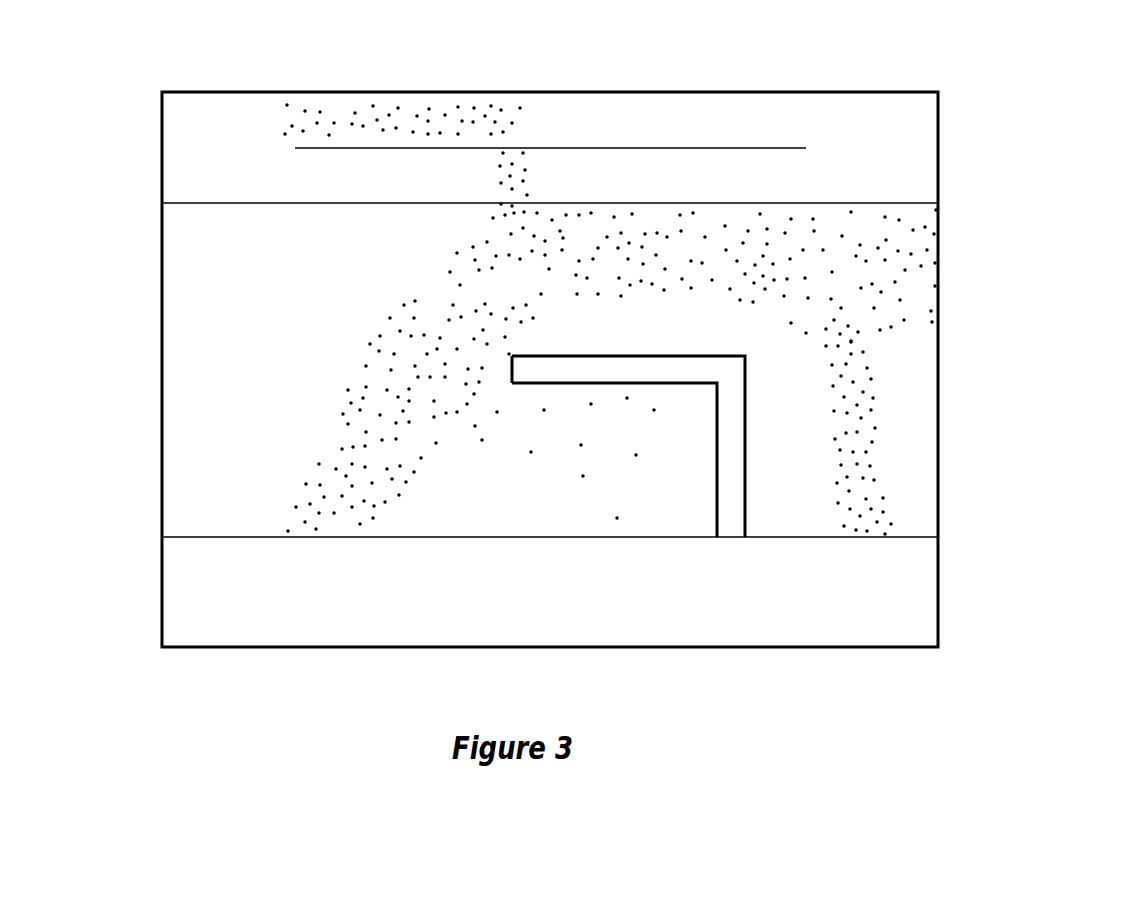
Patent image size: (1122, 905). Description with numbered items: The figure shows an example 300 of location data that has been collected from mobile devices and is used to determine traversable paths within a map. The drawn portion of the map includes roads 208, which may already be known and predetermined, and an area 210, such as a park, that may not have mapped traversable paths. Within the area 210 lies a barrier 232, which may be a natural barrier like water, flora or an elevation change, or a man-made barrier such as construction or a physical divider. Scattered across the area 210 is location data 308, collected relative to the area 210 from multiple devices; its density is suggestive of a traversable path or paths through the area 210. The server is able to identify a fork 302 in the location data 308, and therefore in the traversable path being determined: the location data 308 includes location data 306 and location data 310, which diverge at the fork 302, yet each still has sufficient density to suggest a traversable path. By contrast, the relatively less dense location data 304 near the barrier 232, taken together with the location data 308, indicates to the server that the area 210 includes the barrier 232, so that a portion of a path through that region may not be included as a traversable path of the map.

The assembly 300 is at (993, 67).
The roads 208 is at (918, 567).
The area 210 is at (368, 538).
The barrier 232 is at (736, 530).
The fork 302 is at (900, 298).
The location data 304 is at (611, 457).
The location data 306 is at (878, 503).
The location data 308 is at (630, 275).
The location data 310 is at (925, 238).